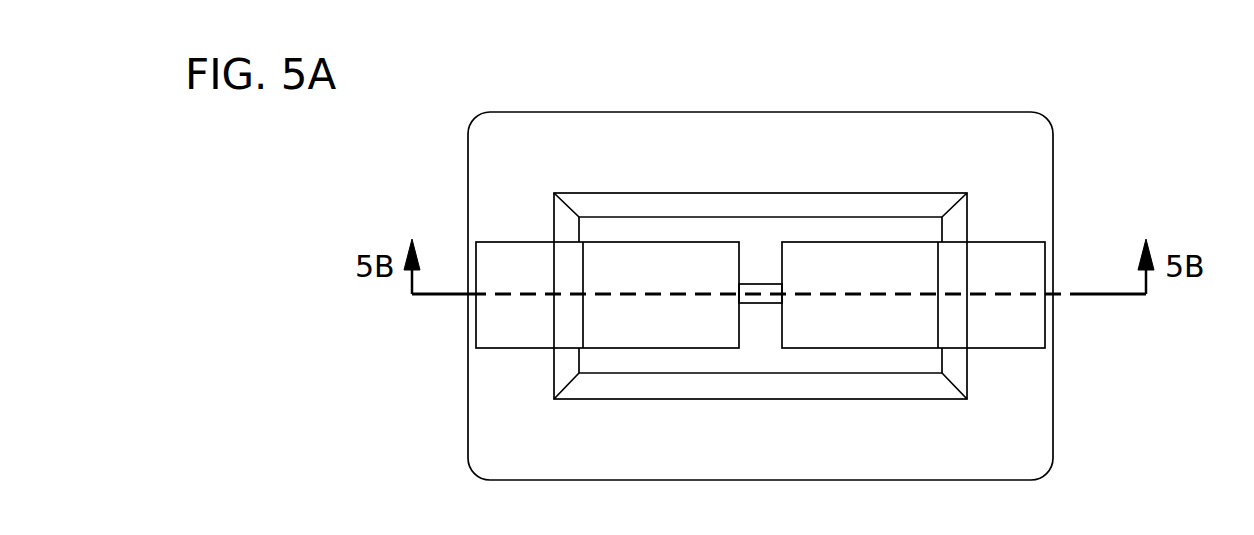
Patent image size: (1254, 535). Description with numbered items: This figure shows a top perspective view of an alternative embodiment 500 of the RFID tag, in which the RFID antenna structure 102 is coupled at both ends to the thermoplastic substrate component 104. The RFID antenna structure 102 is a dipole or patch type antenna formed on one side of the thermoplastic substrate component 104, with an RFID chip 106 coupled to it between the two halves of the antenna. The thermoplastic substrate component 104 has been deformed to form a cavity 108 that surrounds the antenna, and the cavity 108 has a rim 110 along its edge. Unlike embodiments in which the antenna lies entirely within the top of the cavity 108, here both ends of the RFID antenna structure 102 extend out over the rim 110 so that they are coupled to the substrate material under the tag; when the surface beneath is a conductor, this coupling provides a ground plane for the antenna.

The RFID tag embodiment 500 is at (1115, 96).
The RFID antenna structure 102 is at (908, 270).
The thermoplastic substrate component 104 is at (490, 462).
The RFID chip 106 is at (760, 283).
The cavity 108 is at (633, 233).
The rim 110 is at (1020, 435).